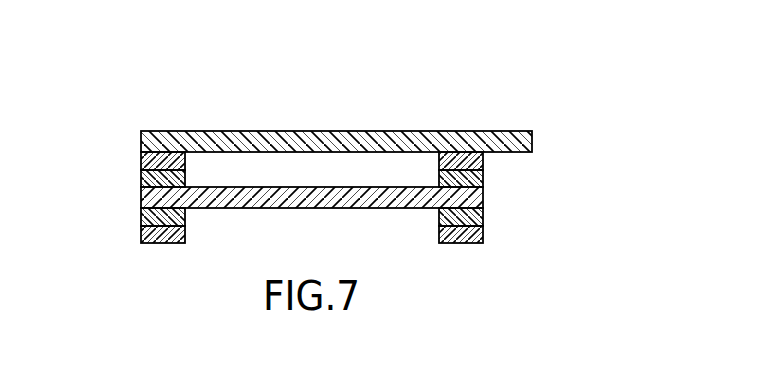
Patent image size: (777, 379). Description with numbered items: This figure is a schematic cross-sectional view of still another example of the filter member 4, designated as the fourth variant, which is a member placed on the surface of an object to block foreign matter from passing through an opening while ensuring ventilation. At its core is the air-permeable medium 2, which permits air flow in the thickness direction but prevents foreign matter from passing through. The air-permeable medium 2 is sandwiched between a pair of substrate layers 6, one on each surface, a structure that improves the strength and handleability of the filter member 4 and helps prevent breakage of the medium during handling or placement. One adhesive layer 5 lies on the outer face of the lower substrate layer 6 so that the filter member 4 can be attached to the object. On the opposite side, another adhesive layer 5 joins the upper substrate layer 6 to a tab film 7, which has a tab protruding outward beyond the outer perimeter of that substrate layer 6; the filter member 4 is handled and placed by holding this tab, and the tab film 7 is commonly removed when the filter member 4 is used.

The filter member 4 is at (507, 46).
The tab film 7 is at (160, 142).
The air-permeable medium 2 is at (163, 197).
The adhesive layer 5 is at (483, 163).
The substrate layer 6 is at (483, 178).